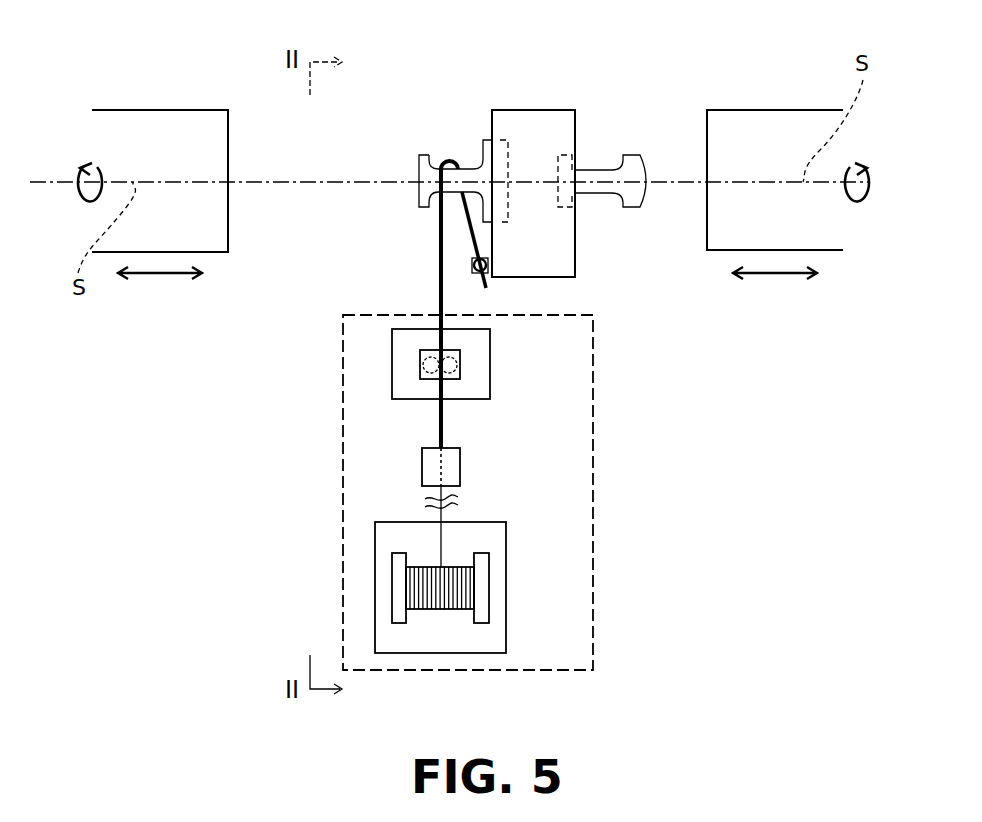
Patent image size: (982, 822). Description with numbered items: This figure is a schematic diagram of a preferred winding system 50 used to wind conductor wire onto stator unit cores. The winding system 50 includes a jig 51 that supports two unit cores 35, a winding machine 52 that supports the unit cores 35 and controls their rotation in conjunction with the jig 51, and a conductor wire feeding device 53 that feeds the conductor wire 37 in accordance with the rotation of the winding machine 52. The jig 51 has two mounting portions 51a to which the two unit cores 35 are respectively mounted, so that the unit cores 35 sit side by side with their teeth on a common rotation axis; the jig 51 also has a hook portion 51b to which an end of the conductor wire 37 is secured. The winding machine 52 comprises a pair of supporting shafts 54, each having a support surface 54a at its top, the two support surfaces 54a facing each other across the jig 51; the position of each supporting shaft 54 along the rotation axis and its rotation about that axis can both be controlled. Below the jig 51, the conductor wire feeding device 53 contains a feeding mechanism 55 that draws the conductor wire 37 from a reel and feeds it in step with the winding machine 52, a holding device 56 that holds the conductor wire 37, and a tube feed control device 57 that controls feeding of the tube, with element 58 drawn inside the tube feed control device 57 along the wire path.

The unit core 35 is at (426, 156).
The conductor wire 37 is at (443, 420).
The winding system 50 is at (686, 381).
The jig 51 is at (533, 118).
The mounting portion 51a is at (476, 116).
The hook portion 51b is at (465, 268).
The winding machine 52 is at (747, 84).
The conductor wire feeding device 53 is at (593, 512).
The supporting shaft 54 is at (476, 171).
The support surface 54a is at (230, 208).
The feeding mechanism 55 is at (506, 578).
The holding device 56 is at (460, 465).
The tube feed control device 57 is at (489, 355).
The guide rollers 58 is at (420, 367).